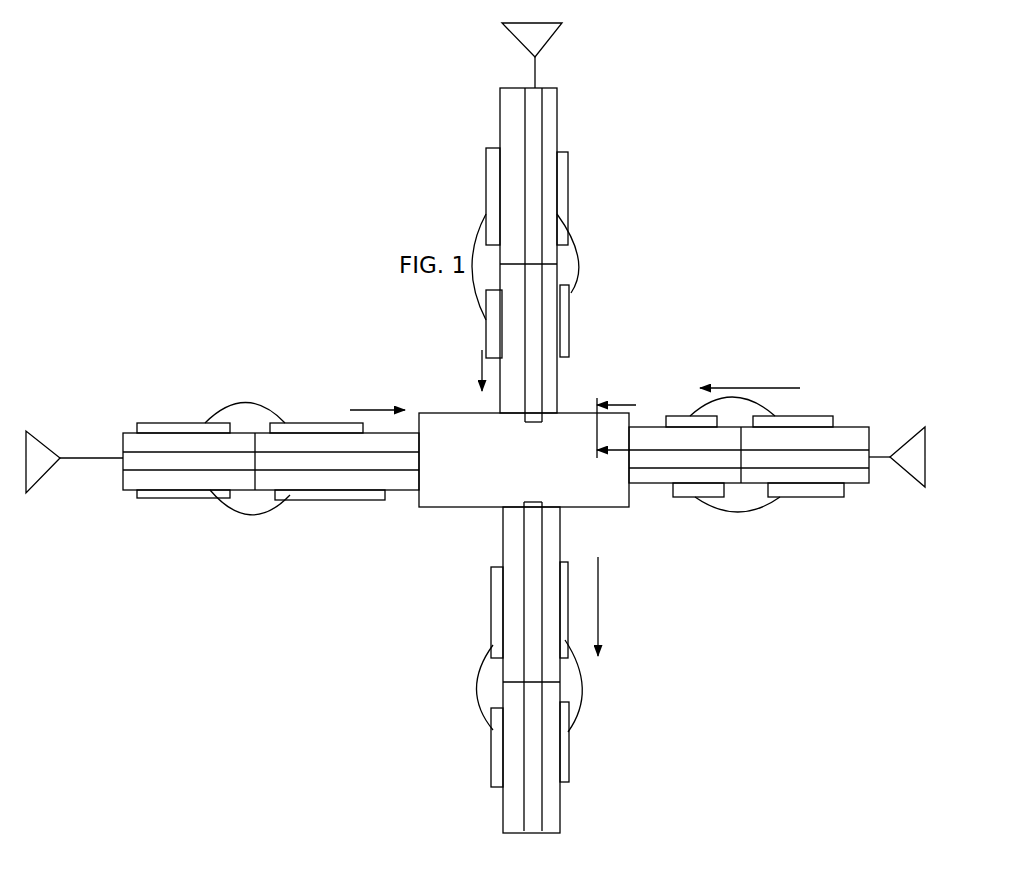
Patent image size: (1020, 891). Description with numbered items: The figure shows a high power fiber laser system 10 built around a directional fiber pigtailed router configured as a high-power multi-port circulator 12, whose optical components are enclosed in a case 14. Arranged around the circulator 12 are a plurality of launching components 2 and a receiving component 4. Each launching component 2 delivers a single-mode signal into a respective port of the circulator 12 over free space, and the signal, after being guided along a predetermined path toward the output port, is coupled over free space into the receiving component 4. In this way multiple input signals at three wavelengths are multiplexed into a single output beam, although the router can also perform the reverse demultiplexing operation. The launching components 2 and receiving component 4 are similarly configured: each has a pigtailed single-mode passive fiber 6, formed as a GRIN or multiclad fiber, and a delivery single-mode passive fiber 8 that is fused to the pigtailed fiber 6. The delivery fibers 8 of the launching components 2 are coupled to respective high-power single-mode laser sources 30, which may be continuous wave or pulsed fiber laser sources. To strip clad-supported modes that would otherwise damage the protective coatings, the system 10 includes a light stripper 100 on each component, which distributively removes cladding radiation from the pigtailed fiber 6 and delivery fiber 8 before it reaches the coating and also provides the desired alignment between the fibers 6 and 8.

The high power fiber laser system 10 is at (413, 375).
The multi-port circulator 12 is at (538, 475).
The case 14 is at (470, 487).
The launching component 2 is at (600, 285).
The receiving component 4 is at (458, 628).
The pigtailed SM passive fiber 6 is at (558, 370).
The delivery SM passive fiber 8 is at (560, 100).
The light stripper 100 is at (287, 518).
The HP SM laser source 30 is at (570, 50).